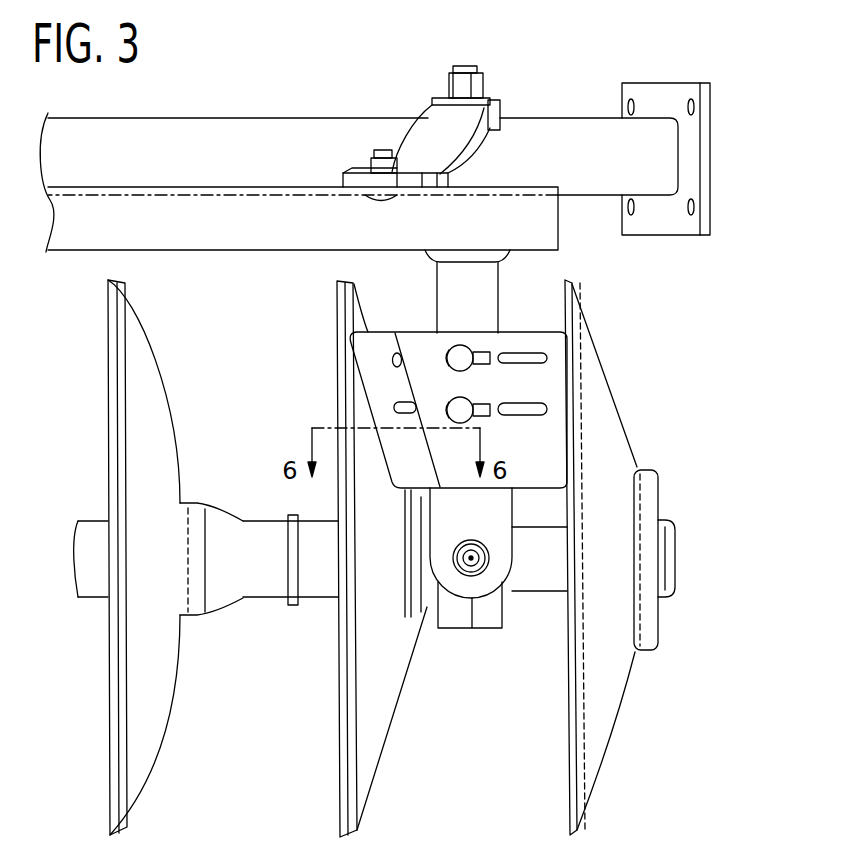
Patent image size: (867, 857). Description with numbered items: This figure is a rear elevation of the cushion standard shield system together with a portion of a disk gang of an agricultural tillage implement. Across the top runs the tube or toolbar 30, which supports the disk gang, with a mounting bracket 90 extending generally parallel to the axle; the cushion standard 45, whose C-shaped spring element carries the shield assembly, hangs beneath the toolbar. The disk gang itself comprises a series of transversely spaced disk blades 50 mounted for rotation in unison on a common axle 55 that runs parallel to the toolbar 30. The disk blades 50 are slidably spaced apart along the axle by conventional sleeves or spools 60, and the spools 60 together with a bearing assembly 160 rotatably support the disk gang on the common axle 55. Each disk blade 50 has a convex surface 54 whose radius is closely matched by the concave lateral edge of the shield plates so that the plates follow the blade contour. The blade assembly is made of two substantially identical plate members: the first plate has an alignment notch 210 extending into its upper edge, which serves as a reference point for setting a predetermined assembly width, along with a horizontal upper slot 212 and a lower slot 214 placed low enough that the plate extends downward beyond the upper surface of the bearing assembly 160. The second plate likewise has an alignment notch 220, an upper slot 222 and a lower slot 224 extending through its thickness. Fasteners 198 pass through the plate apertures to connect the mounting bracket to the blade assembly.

The toolbar 30 is at (375, 167).
The mounting bracket 90 is at (303, 218).
The cushion standard 45 is at (487, 278).
The alignment notch 210 is at (367, 332).
The alignment notch 220 is at (413, 332).
The upper slot 212 is at (400, 358).
The lower slot 214 is at (394, 409).
The upper slot 222 is at (547, 367).
The lower slot 224 is at (547, 414).
The fasteners 198 is at (467, 413).
The bearing assembly 160 is at (487, 620).
The spool 60 is at (218, 592).
The disk blade 50 is at (372, 558).
The convex surface 54 is at (600, 760).
The common axle 55 is at (676, 566).